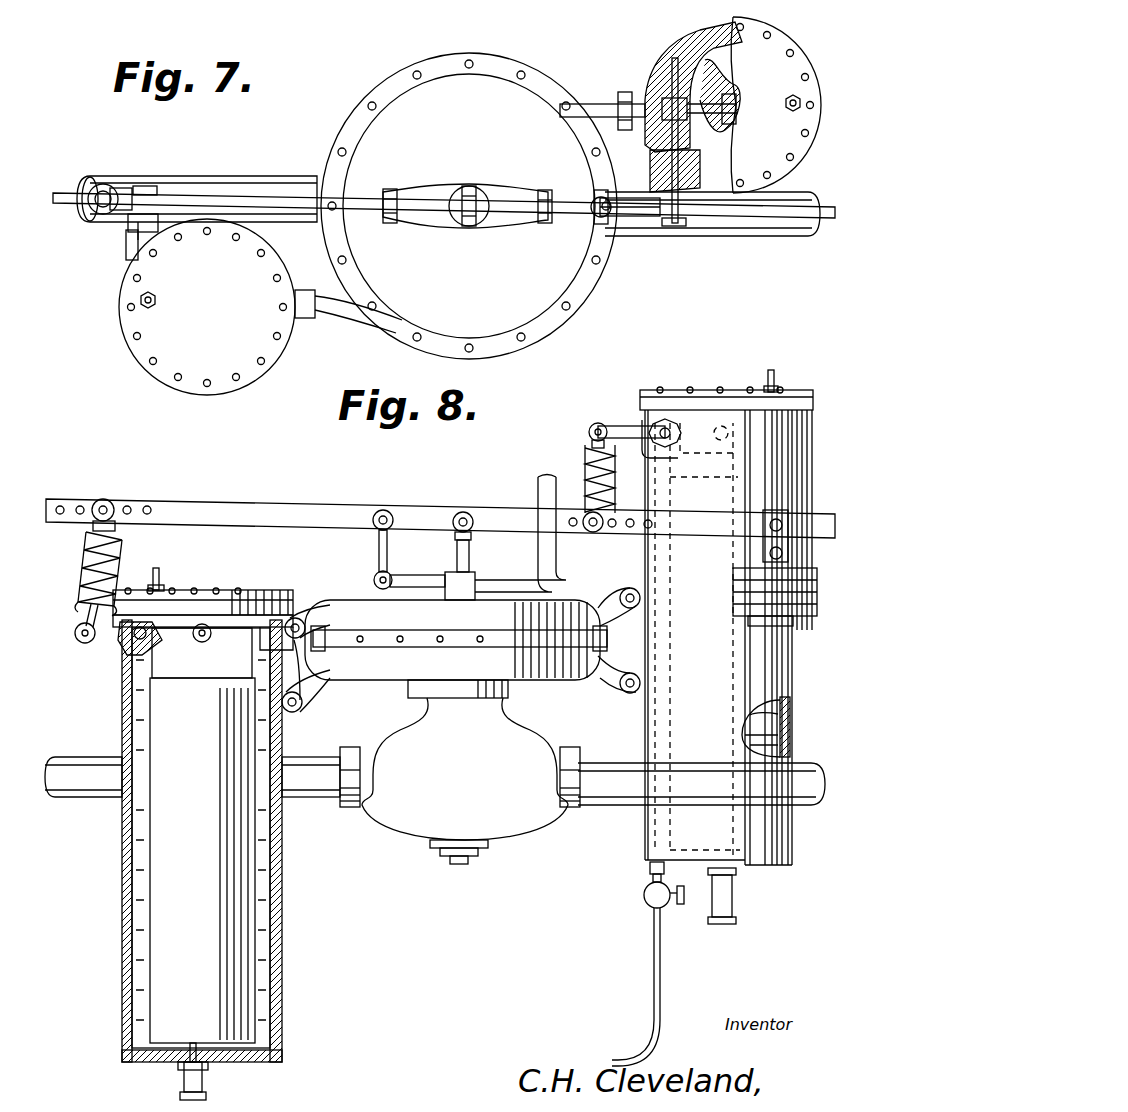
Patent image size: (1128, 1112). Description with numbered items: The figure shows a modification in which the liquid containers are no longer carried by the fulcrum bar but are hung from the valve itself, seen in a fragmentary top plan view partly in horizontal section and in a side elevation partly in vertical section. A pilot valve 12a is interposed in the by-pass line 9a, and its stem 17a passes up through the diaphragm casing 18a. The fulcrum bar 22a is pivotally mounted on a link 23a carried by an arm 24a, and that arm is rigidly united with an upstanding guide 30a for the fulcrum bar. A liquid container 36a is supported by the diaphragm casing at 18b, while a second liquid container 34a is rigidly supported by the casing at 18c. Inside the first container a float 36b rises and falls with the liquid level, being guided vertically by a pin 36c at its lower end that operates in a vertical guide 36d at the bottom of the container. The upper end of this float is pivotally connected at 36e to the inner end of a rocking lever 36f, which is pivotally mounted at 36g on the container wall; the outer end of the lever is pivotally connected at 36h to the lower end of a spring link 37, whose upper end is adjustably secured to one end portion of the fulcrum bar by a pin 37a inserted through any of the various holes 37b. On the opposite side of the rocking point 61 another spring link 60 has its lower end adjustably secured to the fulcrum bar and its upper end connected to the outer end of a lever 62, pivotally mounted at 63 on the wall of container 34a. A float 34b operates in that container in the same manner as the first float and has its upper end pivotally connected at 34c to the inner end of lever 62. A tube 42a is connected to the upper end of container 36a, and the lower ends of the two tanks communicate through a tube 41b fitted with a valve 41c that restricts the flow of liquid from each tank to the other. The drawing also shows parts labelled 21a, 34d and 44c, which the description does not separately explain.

In FIG. 7, the by-pass line 9a is at (787, 234).
In FIG. 8, the by-pass line 9a is at (611, 772).
In FIG. 8, the pilot valve 12a is at (428, 826).
In FIG. 8, the stem 17a is at (470, 576).
In FIG. 7, the diaphragm casing 18a is at (445, 92).
In FIG. 8, the diaphragm casing 18a is at (522, 601).
In FIG. 8, the support 18b is at (285, 650).
In FIG. 7, the support 18c is at (624, 92).
In FIG. 8, the support 18c is at (641, 598).
In FIG. 7, the pivot 21a is at (469, 186).
In FIG. 8, the pivot 21a is at (463, 512).
In FIG. 7, the fulcrum bar 22a is at (240, 172).
In FIG. 8, the fulcrum bar 22a is at (296, 510).
In FIG. 8, the link 23a is at (379, 562).
In FIG. 7, the arm 24a is at (427, 222).
In FIG. 8, the arm 24a is at (413, 576).
In FIG. 7, the upstanding guide 30a is at (546, 189).
In FIG. 8, the upstanding guide 30a is at (557, 548).
In FIG. 7, the second liquid container 34a is at (797, 70).
In FIG. 8, the second liquid container 34a is at (642, 846).
In FIG. 7, the float 34b is at (705, 45).
In FIG. 8, the float 34b is at (775, 738).
In FIG. 7, the pivotal connection 34c is at (742, 96).
In FIG. 8, the pivotal connection 34c is at (726, 424).
In FIG. 8, the drain fitting 34d is at (732, 894).
In FIG. 7, the liquid container 36a is at (268, 344).
In FIG. 8, the liquid container 36a is at (122, 902).
In FIG. 8, the float 36b is at (152, 946).
In FIG. 8, the pin 36c is at (208, 1080).
In FIG. 8, the vertical guide 36d is at (184, 1080).
In FIG. 8, the pivotal connection 36e is at (210, 626).
In FIG. 8, the rocking lever 36f is at (181, 626).
In FIG. 8, the pivot 36g is at (124, 657).
In FIG. 8, the pivotal connection 36h is at (80, 643).
In FIG. 7, the spring link 37 is at (102, 190).
In FIG. 8, the spring link 37 is at (86, 556).
In FIG. 7, the pin 37a is at (100, 226).
In FIG. 8, the pin 37a is at (103, 499).
In FIG. 8, the holes 37b is at (148, 506).
In FIG. 8, the tube 41b is at (614, 1057).
In FIG. 8, the valve 41c is at (648, 903).
In FIG. 7, the tube 42a is at (157, 301).
In FIG. 8, the tube 42a is at (153, 580).
In FIG. 7, the nut 44c is at (789, 112).
In FIG. 8, the nut 44c is at (773, 376).
In FIG. 7, the spring link 60 is at (592, 210).
In FIG. 8, the spring link 60 is at (588, 480).
In FIG. 7, the rocking point 61 is at (392, 188).
In FIG. 8, the rocking point 61 is at (383, 510).
In FIG. 7, the lever 62 is at (645, 226).
In FIG. 8, the lever 62 is at (620, 426).
In FIG. 7, the pivot 63 is at (677, 228).
In FIG. 8, the pivot 63 is at (665, 418).